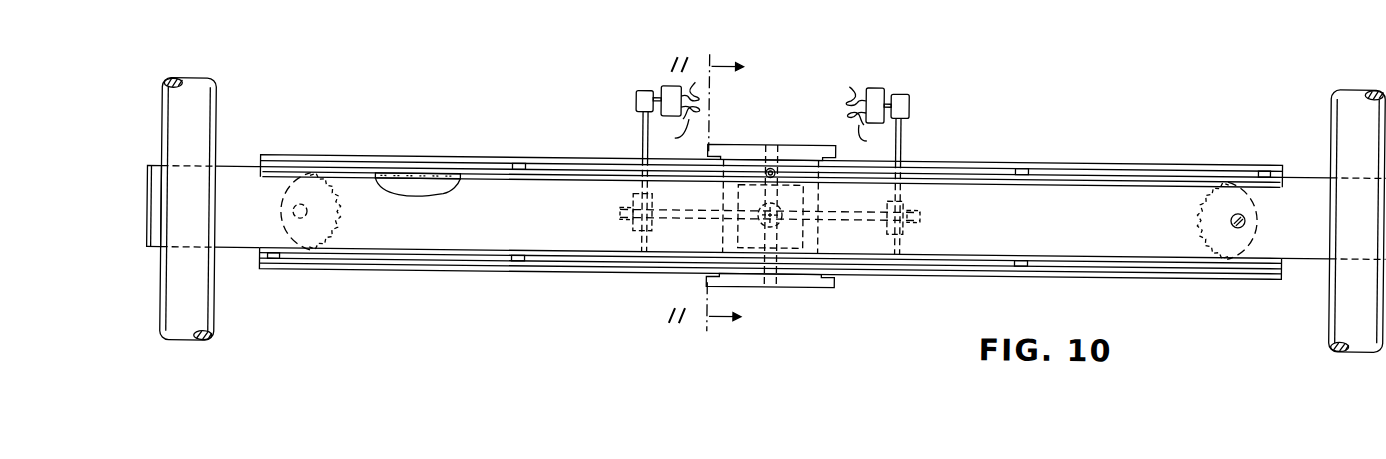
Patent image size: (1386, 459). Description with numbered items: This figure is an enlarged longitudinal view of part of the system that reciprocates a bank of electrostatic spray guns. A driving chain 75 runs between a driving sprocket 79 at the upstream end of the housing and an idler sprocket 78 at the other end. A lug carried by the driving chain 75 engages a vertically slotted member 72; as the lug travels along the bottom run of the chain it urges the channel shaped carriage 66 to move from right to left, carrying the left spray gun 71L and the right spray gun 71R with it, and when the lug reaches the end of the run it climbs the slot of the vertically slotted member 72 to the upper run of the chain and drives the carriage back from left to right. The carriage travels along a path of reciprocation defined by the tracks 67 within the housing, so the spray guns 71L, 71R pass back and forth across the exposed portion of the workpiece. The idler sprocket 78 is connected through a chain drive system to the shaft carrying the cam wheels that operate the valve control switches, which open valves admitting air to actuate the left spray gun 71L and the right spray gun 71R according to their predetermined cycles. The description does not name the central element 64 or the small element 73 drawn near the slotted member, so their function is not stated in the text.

The center housing 64 is at (878, 234).
The channel shaped carriage 66 is at (800, 287).
The tracks 67 is at (538, 163).
The left spray gun 71L is at (666, 88).
The right spray gun 71R is at (883, 92).
The vertically slotted member 72 is at (770, 147).
The pivot ring 73 is at (774, 170).
The driving chain 75 is at (425, 182).
The idler sprocket 78 is at (1197, 224).
The driving sprocket 79 is at (344, 230).